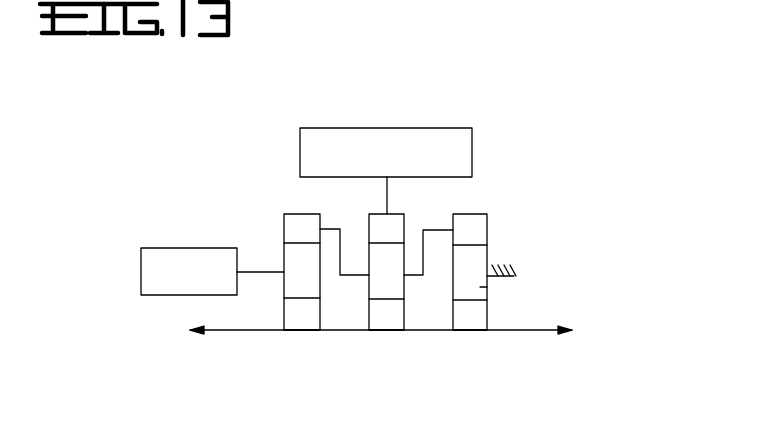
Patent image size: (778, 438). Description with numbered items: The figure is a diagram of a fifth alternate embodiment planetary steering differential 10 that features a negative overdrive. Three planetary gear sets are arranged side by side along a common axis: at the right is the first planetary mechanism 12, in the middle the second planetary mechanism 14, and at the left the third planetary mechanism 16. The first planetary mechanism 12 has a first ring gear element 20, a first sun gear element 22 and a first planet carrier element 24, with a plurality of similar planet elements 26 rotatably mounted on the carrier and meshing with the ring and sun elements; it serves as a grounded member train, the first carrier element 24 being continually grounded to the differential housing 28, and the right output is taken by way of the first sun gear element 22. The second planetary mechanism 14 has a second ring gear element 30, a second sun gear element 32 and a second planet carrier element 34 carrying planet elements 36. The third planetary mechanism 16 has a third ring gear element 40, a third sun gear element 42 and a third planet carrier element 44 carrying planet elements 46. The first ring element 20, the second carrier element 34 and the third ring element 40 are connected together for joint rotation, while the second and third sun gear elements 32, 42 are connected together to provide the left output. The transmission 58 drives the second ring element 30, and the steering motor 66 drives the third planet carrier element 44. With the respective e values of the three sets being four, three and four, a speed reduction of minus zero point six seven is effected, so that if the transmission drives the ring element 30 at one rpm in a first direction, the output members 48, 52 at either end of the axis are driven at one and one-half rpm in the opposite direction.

The planetary steering differential 10 is at (207, 158).
The first planetary mechanism 12 is at (474, 338).
The second planetary mechanism 14 is at (384, 338).
The third planetary mechanism 16 is at (290, 338).
The first ring gear element 20 is at (535, 189).
The first sun gear element 22 is at (463, 322).
The first planet carrier element 24 is at (514, 278).
The planet elements 26 is at (563, 291).
The differential housing 28 is at (565, 243).
The second ring gear element 30 is at (445, 188).
The second sun gear element 32 is at (378, 322).
The second planet carrier element 34 is at (453, 310).
The planet elements 36 is at (380, 254).
The third ring gear element 40 is at (300, 218).
The third sun gear element 42 is at (292, 317).
The third planet carrier element 44 is at (259, 274).
The planet elements 46 is at (295, 252).
The output member 48 is at (515, 332).
The output member 52 is at (200, 327).
The transmission 58 is at (355, 128).
The steering motor 66 is at (171, 248).